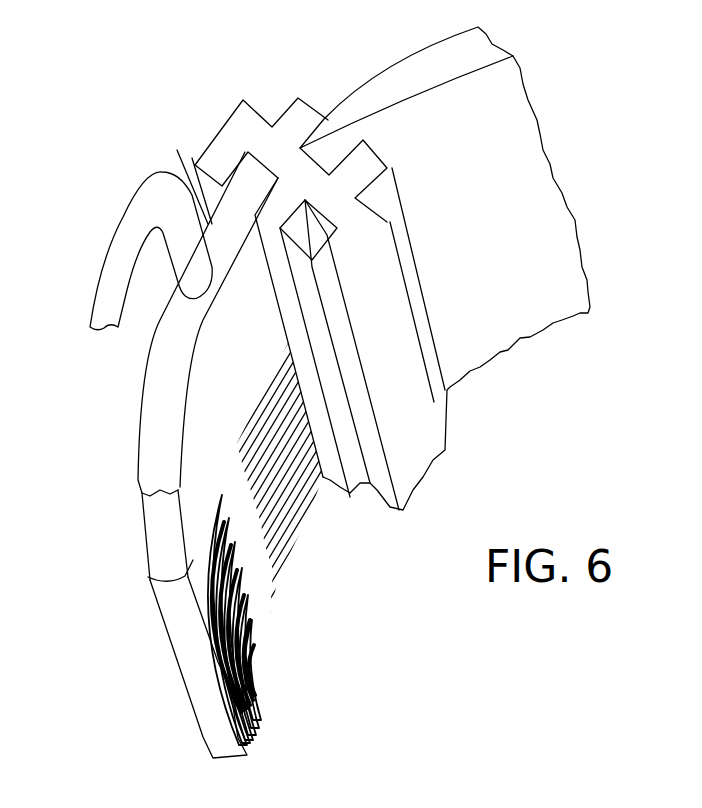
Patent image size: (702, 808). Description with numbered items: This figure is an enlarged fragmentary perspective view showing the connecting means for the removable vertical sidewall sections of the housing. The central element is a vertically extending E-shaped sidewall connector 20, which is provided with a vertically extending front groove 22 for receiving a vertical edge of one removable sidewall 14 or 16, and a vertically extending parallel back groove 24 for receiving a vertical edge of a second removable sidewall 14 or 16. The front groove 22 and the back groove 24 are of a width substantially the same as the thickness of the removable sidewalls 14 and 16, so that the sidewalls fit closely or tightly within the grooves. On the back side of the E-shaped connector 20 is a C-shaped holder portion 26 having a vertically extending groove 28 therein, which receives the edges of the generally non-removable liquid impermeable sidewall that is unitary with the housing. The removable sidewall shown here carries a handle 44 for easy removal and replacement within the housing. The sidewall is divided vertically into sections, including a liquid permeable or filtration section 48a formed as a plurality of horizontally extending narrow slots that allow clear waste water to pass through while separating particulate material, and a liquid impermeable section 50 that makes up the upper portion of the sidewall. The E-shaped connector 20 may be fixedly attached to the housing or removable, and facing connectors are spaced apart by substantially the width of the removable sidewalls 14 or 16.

The removable sidewall 14 is at (192, 160).
The removable sidewall 16 is at (500, 108).
The E-shaped sidewall connector 20 is at (265, 167).
The front groove 22 is at (212, 150).
The back groove 24 is at (437, 402).
The C-shaped holder portion 26 is at (294, 112).
The vertically extending groove 28 is at (323, 130).
The handle 44 is at (120, 237).
The liquid permeable or filtration section 48a is at (222, 661).
The liquid impermeable section 50 is at (150, 580).